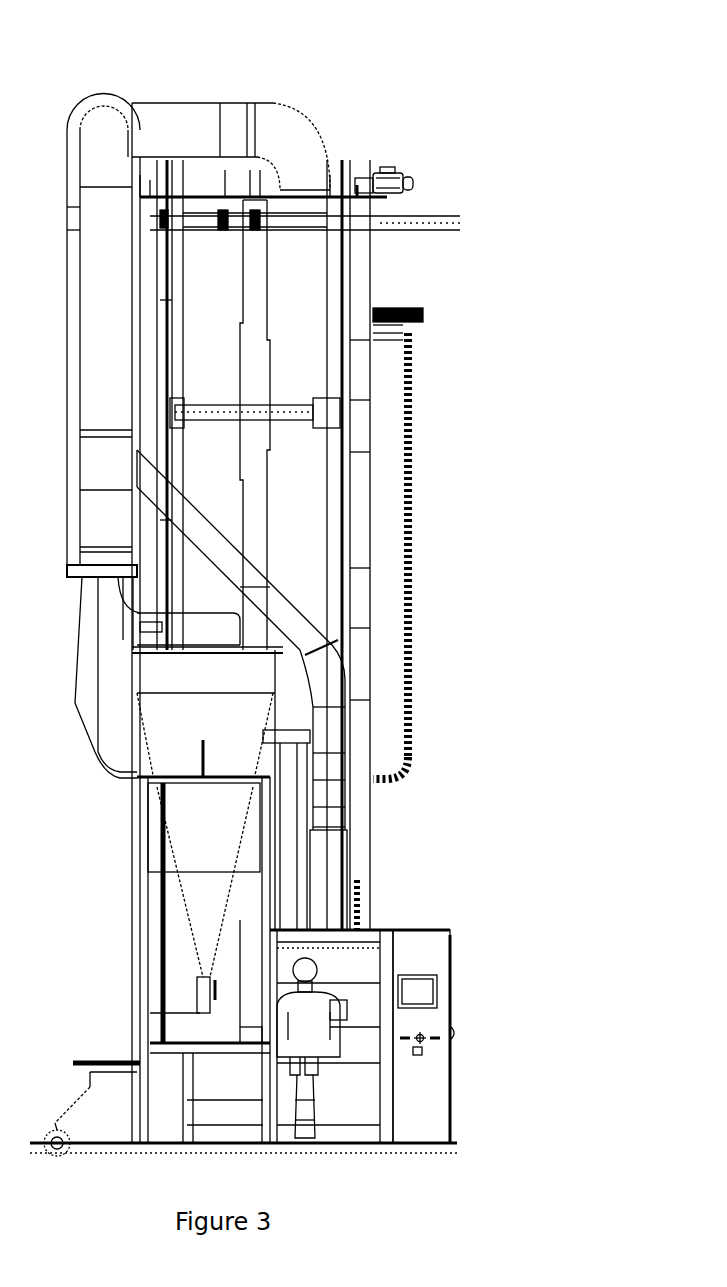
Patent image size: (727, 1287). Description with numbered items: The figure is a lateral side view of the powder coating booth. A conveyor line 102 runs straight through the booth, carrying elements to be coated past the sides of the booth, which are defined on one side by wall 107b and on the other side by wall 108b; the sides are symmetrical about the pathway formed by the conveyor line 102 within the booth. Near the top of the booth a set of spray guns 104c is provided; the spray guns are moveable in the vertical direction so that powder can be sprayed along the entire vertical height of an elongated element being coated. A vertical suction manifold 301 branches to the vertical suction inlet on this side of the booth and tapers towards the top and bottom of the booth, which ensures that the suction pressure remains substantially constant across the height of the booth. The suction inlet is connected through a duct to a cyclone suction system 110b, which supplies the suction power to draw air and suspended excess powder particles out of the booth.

The wall 108b is at (208, 258).
The wall 107b is at (312, 280).
The conveyor line 102 is at (430, 217).
The set of spray guns 104c is at (423, 313).
The vertical suction manifold 301 is at (250, 365).
The cyclone suction system 110b is at (207, 707).